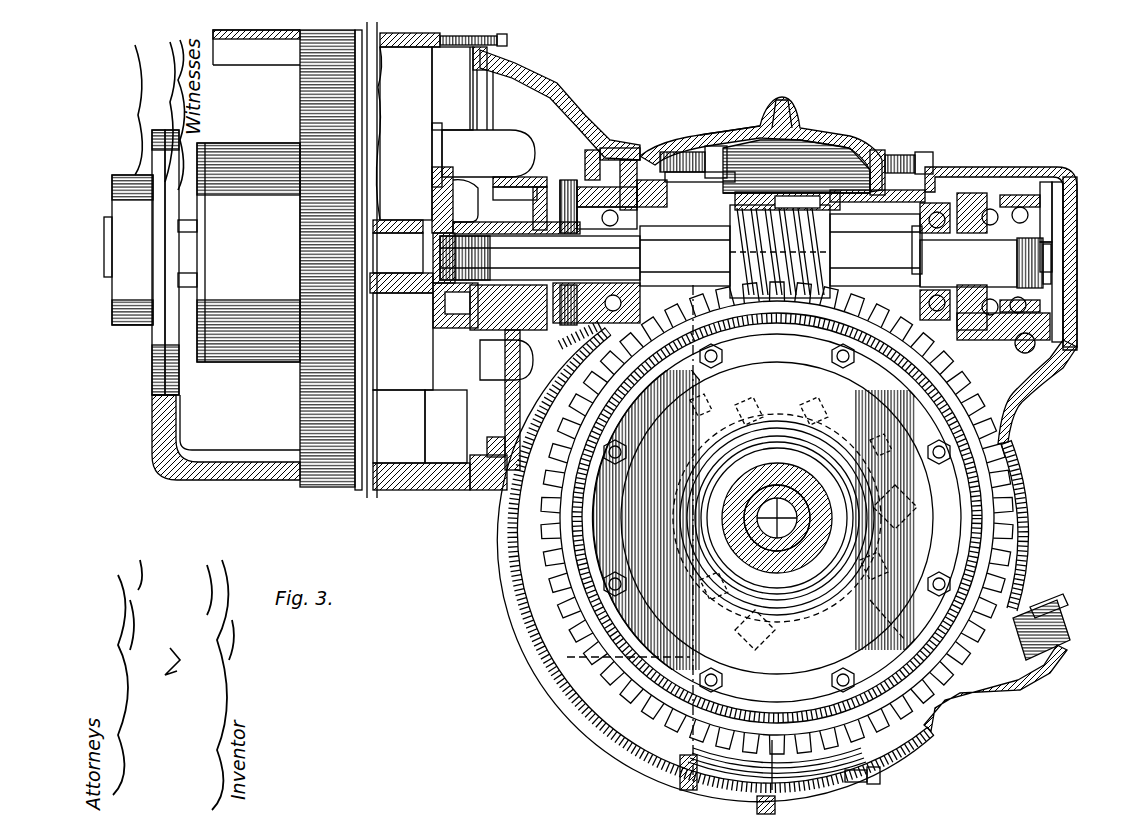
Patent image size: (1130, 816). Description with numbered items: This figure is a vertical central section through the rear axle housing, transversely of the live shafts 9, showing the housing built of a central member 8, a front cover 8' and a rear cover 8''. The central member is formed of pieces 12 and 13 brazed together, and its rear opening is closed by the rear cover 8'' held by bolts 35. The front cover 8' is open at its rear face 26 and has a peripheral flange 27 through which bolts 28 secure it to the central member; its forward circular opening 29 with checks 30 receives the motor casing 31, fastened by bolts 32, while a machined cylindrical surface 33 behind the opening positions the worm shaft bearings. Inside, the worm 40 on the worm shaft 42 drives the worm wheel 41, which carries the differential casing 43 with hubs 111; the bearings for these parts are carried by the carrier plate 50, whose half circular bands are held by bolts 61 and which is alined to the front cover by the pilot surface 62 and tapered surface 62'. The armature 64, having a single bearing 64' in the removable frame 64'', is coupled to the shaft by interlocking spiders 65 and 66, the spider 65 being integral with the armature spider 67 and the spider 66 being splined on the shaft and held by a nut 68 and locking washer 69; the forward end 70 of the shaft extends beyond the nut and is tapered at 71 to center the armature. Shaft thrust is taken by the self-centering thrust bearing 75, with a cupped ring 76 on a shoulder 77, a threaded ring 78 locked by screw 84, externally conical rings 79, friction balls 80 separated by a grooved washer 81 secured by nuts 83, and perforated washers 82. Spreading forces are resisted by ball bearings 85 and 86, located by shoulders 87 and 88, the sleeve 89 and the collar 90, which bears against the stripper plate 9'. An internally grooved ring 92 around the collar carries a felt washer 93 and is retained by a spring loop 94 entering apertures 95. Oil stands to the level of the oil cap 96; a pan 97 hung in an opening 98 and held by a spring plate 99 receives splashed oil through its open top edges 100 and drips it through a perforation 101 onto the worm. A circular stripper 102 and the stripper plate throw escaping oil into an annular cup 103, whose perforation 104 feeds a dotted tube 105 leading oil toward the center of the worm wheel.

The central member 8 is at (757, 115).
The front cover 8' is at (560, 105).
The rear cover 8'' is at (778, 565).
The live shafts 9 is at (880, 629).
The stripper plate 9' is at (505, 193).
The casing piece 12 is at (843, 146).
The casing piece 13 is at (737, 130).
The rear face 26 is at (692, 150).
The peripheral flange 27 is at (684, 780).
The bolts 28 is at (676, 150).
The opening 29 is at (470, 68).
The checks 30 is at (451, 490).
The motor casing 31 is at (398, 490).
The bolts 32 is at (508, 41).
The machined surface 33 is at (622, 150).
The bolts 35 is at (917, 155).
The worm 40 is at (732, 240).
The worm wheel 41 is at (1040, 332).
The worm shaft 42 is at (685, 256).
The differential casing 43 is at (882, 592).
The carrier plate 50 is at (700, 378).
The bolts 61 is at (920, 520).
The pilot surface 62 is at (644, 163).
The tapered surface 62' is at (601, 134).
The armature 64 is at (314, 204).
The bearing 64' is at (122, 263).
The removable frame 64'' is at (226, 437).
The spider 65 is at (552, 200).
The spider 66 is at (530, 345).
The armature spider 67 is at (483, 155).
The nut 68 is at (480, 213).
The locking washer 69 is at (472, 312).
The forward end 70 is at (416, 232).
The tapered tip 71 is at (401, 331).
The thrust bearing 75 is at (1040, 200).
The conically cupped ring 76 is at (972, 192).
The shoulder 77 is at (945, 170).
The conically cupped ring 78 is at (1060, 215).
The externally conical rings 79 is at (992, 200).
The friction balls 80 is at (1052, 218).
The grooved washer 81 is at (1046, 270).
The perforated washers 82 is at (1030, 200).
The nuts 83 is at (1045, 257).
The screw 84 is at (1035, 345).
The ball bearing 85 is at (618, 280).
The ball bearing 86 is at (921, 300).
The shoulder 87 is at (646, 240).
The shoulder 88 is at (916, 241).
The sleeve 89 is at (968, 263).
The collar 90 is at (650, 178).
The internally-grooved ring 92 is at (587, 360).
The felt washer 93 is at (632, 320).
The spring loop 94 is at (560, 190).
The apertures 95 is at (572, 195).
The oil cap 96 is at (1046, 632).
The pan 97 is at (782, 300).
The opening 98 is at (781, 100).
The spring plate 99 is at (877, 160).
The top edges 100 is at (815, 190).
The perforation 101 is at (787, 198).
The circular stripper 102 is at (722, 346).
The annular cup 103 is at (545, 368).
The perforation 104 is at (525, 400).
The tube 105 is at (532, 415).
The hubs 111 is at (862, 540).